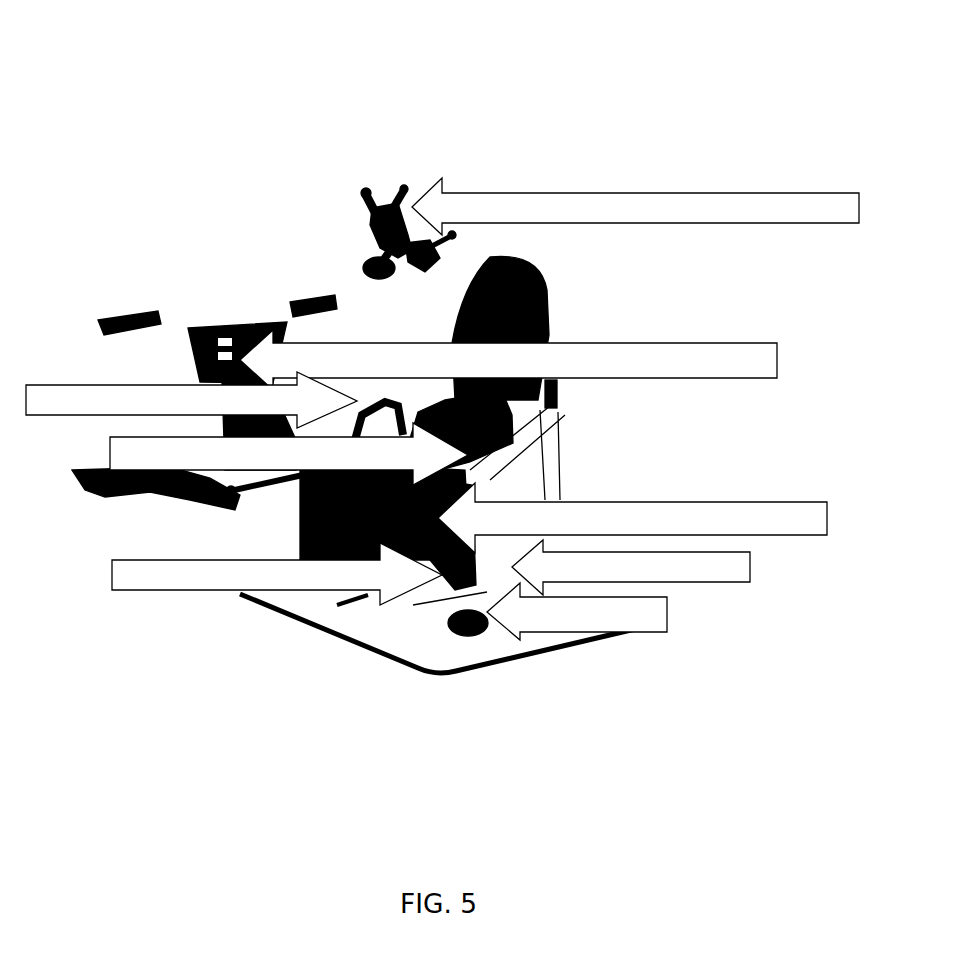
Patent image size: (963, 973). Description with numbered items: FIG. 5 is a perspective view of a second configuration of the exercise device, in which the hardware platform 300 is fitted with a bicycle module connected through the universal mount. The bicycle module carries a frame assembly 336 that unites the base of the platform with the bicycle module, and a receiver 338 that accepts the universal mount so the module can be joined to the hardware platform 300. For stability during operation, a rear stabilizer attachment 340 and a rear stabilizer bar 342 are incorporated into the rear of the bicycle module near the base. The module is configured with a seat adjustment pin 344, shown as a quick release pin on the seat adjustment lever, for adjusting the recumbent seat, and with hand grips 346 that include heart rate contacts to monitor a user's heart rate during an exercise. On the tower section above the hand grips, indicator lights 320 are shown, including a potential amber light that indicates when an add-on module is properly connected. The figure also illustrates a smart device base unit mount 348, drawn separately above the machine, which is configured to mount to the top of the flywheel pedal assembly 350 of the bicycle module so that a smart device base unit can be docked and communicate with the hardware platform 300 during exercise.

The hardware platform 300 is at (462, 32).
The indicator lights 320 is at (539, 360).
The frame assembly 336 is at (277, 588).
The receiver 338 is at (656, 535).
The rear stabilizer attachment 340 is at (658, 567).
The rear stabilizer bar 342 is at (577, 630).
The seat adjustment pin 344 is at (289, 468).
The hand grips 346 is at (187, 411).
The smart device base unit mount 348 is at (610, 228).
The flywheel pedal assembly 350 is at (355, 432).